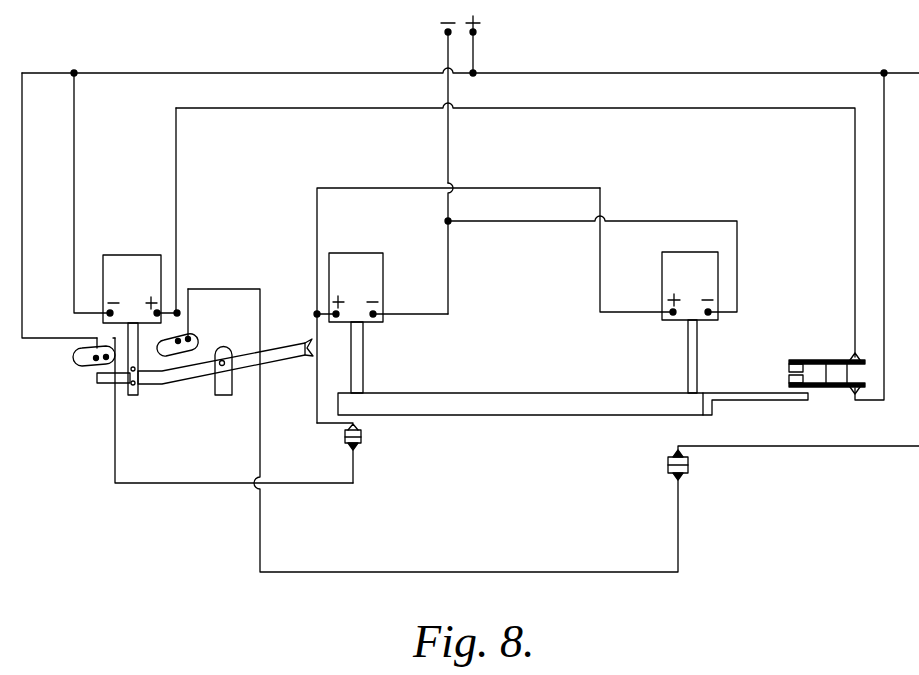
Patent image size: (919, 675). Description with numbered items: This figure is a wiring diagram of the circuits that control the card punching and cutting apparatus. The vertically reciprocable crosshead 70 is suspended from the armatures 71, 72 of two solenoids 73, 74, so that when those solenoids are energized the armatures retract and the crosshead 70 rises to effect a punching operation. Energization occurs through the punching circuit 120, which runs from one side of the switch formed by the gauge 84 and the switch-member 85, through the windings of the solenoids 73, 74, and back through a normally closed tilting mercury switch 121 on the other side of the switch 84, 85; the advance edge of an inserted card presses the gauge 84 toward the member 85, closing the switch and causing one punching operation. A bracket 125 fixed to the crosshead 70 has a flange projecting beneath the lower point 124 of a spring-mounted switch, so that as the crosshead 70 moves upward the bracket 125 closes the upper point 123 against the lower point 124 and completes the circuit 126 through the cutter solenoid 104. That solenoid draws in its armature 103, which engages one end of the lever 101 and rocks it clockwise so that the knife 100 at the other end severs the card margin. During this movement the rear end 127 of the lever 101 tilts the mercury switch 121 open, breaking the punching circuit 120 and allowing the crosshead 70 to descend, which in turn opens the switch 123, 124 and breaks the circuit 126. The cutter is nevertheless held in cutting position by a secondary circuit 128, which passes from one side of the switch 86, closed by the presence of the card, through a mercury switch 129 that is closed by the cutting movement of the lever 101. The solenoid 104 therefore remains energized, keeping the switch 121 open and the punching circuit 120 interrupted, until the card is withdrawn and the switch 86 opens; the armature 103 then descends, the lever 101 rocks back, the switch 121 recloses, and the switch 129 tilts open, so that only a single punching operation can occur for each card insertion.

The crosshead 70 is at (590, 397).
The armature 71 is at (362, 362).
The armature 72 is at (688, 353).
The solenoid 73 is at (372, 273).
The solenoid 74 is at (706, 240).
The gauge 84 is at (361, 436).
The switch-member 85 is at (358, 446).
The switch 86 is at (668, 468).
The knife 100 is at (306, 348).
The lever 101 is at (182, 378).
The armature 103 is at (134, 396).
The solenoid 104 is at (147, 262).
The circuit 120 is at (563, 188).
The tilting mercury switch 121 is at (80, 366).
The upper point 123 is at (797, 362).
The lower point 124 is at (815, 390).
The bracket 125 is at (753, 400).
The circuit 126 is at (177, 198).
The rear end 127 is at (108, 384).
The secondary circuit 128 is at (262, 395).
The mercury switch 129 is at (188, 333).